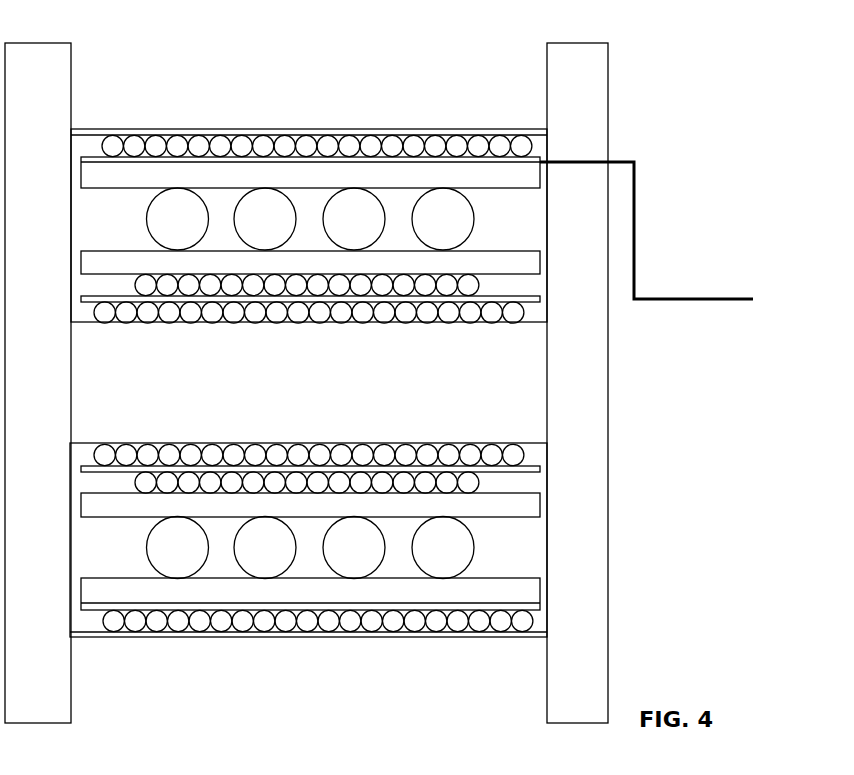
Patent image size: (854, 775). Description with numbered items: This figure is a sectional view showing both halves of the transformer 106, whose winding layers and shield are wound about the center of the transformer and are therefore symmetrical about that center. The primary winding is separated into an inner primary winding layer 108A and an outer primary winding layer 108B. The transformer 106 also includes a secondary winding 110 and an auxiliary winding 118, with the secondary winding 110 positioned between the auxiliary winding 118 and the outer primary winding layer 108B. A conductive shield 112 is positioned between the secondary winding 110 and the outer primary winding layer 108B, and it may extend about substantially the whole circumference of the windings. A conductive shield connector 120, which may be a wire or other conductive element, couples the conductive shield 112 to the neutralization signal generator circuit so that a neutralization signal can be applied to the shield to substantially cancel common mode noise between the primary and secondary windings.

The transformer 106 is at (253, 41).
The inner primary winding layer 108A is at (107, 312).
The outer primary winding layer 108B is at (530, 147).
The secondary winding 110 is at (155, 225).
The conductive shield 112 is at (92, 159).
The auxiliary winding 118 is at (135, 285).
The conductive shield connector 120 is at (635, 235).